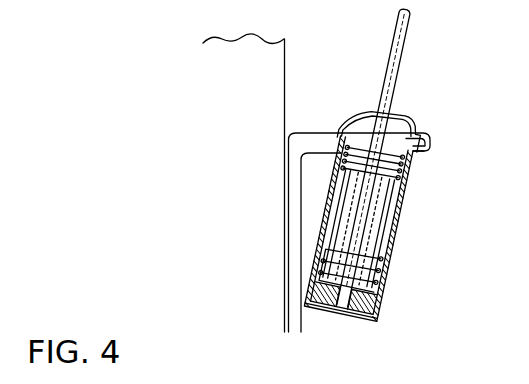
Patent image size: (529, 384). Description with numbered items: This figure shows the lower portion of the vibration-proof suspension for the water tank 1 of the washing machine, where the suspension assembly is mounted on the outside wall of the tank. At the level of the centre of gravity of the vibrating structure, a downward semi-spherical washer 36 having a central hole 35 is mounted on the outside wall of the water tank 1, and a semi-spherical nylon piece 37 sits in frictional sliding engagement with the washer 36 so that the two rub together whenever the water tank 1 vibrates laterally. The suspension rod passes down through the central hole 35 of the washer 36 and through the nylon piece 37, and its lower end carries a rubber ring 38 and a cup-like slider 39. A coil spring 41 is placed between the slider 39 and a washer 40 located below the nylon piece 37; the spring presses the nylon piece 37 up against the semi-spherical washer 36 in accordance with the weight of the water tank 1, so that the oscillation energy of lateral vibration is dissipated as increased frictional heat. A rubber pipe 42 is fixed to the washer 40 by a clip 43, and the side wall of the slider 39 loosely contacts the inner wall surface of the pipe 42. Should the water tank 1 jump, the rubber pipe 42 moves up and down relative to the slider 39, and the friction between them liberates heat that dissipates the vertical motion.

The water tank 1 is at (285, 66).
The central hole 35 is at (397, 117).
The semi-spherical washer 36 is at (414, 128).
The nylon piece 37 is at (363, 120).
The rubber ring 38 is at (362, 322).
The slider 39 is at (385, 287).
The washer 40 is at (408, 156).
The coil spring 41 is at (390, 257).
The rubber pipe 42 is at (400, 221).
The clip 43 is at (418, 151).